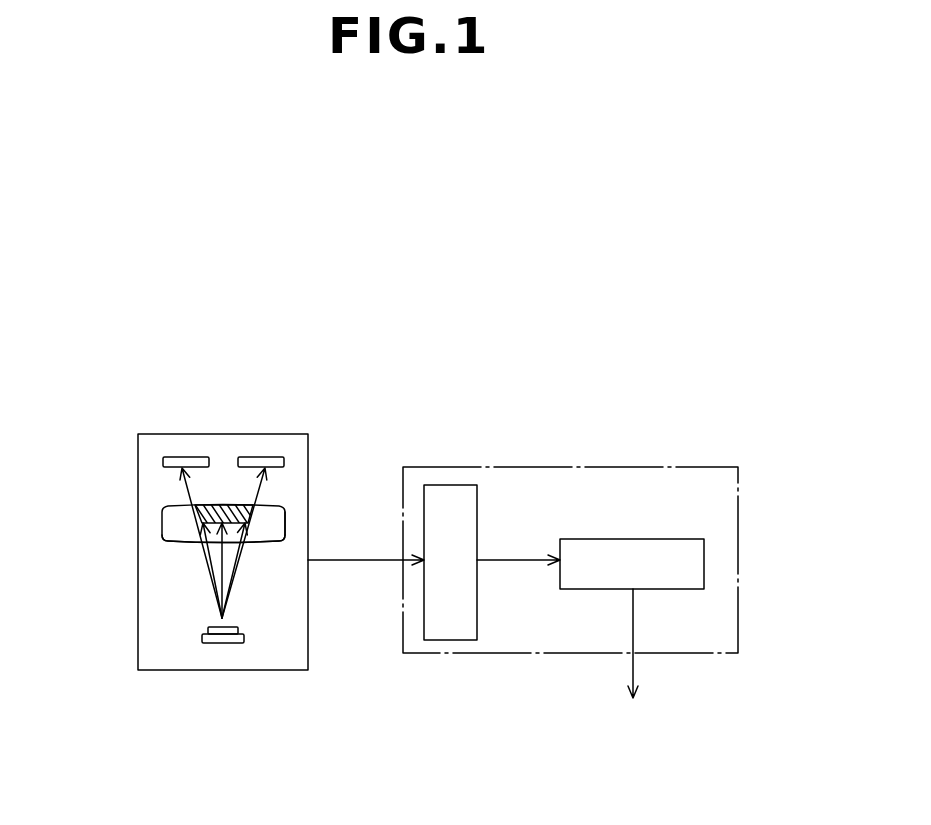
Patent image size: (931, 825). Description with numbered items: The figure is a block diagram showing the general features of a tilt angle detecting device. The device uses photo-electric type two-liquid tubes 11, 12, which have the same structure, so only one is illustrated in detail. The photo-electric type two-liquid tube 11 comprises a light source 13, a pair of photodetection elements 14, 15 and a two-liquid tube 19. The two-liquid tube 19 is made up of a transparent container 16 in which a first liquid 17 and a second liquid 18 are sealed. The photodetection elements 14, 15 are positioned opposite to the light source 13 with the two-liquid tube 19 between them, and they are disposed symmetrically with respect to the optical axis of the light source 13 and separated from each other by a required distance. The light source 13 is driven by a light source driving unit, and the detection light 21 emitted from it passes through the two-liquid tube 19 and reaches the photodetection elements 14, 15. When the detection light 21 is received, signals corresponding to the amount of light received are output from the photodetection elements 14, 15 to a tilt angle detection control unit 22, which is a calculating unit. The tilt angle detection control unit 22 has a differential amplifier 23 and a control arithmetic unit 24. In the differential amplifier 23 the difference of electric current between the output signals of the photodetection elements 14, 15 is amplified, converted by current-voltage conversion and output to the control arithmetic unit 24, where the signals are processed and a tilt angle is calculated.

The photo-electric type two-liquid tube 11 is at (223, 609).
The photo-electric type two-liquid tube 12 is at (210, 672).
The light source 13 is at (200, 627).
The photodetection element 14 is at (172, 457).
The photodetection element 15 is at (260, 457).
The transparent container 16 is at (161, 510).
The first liquid 17 is at (177, 531).
The second liquid 18 is at (213, 505).
The two-liquid tube 19 is at (286, 522).
The detection light 21 is at (246, 568).
The tilt angle detection control unit 22 is at (523, 467).
The differential amplifier 23 is at (441, 640).
The control arithmetic unit 24 is at (705, 553).